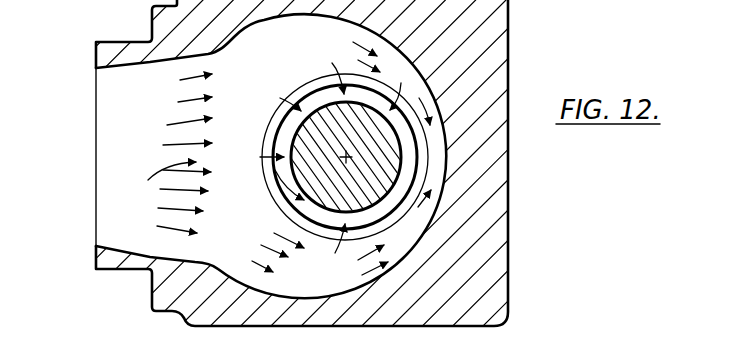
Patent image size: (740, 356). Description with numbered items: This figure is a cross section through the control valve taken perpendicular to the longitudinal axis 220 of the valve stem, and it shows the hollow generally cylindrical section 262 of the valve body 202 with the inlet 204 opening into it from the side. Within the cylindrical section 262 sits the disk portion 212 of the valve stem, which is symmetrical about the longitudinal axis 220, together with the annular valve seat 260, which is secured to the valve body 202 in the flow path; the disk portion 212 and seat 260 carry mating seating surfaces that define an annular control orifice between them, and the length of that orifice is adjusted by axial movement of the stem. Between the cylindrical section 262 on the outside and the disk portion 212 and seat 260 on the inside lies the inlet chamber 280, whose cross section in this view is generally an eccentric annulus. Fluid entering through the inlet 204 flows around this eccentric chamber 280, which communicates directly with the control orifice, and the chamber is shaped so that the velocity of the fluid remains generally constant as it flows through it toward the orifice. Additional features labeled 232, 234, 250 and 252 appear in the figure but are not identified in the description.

The valve body 202 is at (509, 50).
The inlet 204 is at (122, 167).
The disk portion 212 is at (290, 136).
The longitudinal axis 220 is at (346, 157).
The inner sleeve 232 is at (335, 345).
The outer sleeve 234 is at (388, 345).
The outlet 250 is at (510, 349).
The wall 252 is at (457, 351).
The annular valve seat 260 is at (392, 202).
The cylindrical section 262 is at (448, 151).
The inlet chamber 280 is at (405, 70).